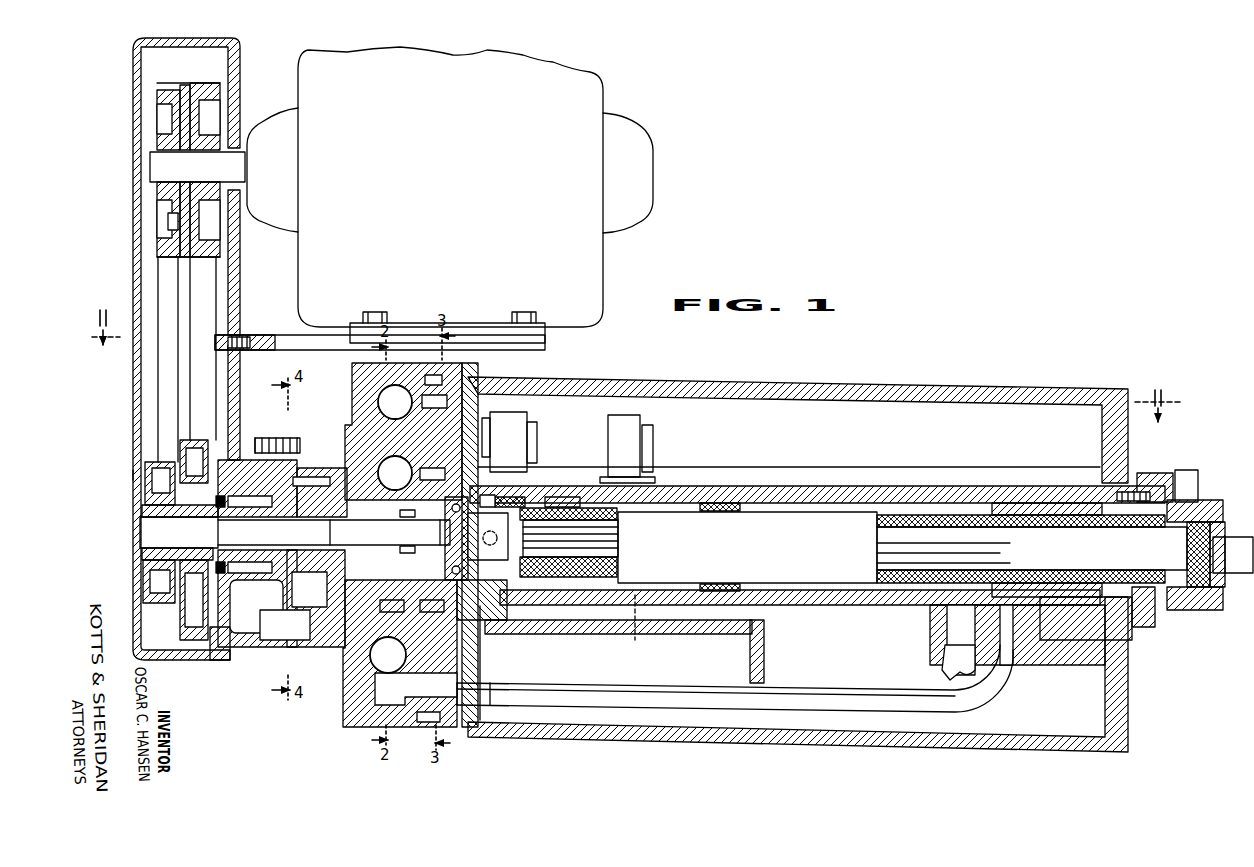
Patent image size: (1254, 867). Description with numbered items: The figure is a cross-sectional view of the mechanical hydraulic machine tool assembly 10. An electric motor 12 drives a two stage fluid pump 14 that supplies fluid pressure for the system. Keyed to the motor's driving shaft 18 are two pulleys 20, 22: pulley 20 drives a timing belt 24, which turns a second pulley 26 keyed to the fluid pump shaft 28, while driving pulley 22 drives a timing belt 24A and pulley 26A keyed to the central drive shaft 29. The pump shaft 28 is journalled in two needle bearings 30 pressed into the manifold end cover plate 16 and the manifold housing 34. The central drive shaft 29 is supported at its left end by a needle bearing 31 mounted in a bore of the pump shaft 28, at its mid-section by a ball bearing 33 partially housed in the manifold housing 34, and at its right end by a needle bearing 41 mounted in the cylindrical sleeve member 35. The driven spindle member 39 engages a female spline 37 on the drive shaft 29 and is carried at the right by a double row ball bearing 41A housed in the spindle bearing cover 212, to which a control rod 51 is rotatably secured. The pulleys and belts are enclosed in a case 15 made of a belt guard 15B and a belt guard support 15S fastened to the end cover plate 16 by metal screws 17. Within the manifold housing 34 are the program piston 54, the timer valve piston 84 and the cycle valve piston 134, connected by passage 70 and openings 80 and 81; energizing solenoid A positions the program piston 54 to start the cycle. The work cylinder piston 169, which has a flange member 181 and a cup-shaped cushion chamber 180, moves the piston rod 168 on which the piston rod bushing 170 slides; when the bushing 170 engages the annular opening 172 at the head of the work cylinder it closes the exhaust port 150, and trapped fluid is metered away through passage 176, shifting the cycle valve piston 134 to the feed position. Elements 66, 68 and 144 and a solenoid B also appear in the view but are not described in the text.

The mechanical hydraulic machine tool assembly 10 is at (848, 372).
The electric motor 12 is at (458, 173).
The two stage fluid pump 14 is at (308, 517).
The case 15 is at (133, 210).
The belt guard 15B is at (133, 472).
The belt guard support 15S is at (225, 660).
The manifold end cover plate 16 is at (245, 440).
The metal screws 17 is at (244, 335).
The driving shaft 18 is at (206, 177).
The pulley 20 is at (192, 85).
The driving pulley 22 is at (165, 90).
The timing belt 24 is at (213, 300).
The timing belt 24A is at (178, 300).
The second pulley 26 is at (194, 540).
The pulley 26A is at (159, 532).
The fluid pump shaft 28 is at (410, 510).
The central drive shaft 29 is at (420, 545).
The needle bearings 30 is at (250, 517).
The needle bearing 31 is at (200, 519).
The ball bearing 33 is at (445, 553).
The manifold housing 34 is at (352, 386).
The cylindrical sleeve member 35 is at (560, 606).
The female spline 37 is at (1012, 545).
The driven spindle member 39 is at (1118, 556).
The needle bearing 41 is at (992, 529).
The double row ball bearing 41A is at (1210, 587).
The control rod 51 is at (1163, 473).
The program piston 54 is at (404, 482).
The lower chamber 66 is at (813, 680).
The inner sleeve 68 is at (282, 640).
The passage 70 is at (412, 539).
The opening 80 is at (434, 401).
The opening 81 is at (442, 380).
The timer valve piston 84 is at (404, 411).
The cycle valve piston 134 is at (400, 664).
The port 144 is at (435, 722).
The port 150 is at (1005, 693).
The work cylinder piston rod 168 is at (772, 556).
The work cylinder piston 169 is at (557, 496).
The piston rod bushing 170 is at (718, 492).
The head of the work cylinder 172 is at (930, 628).
The passage 176 is at (940, 672).
The cup-shaped cushion chamber 180 is at (510, 496).
The flange member 181 is at (498, 496).
The spindle bearing cover 212 is at (1205, 500).
The solenoid A is at (627, 458).
The solenoid B is at (513, 440).